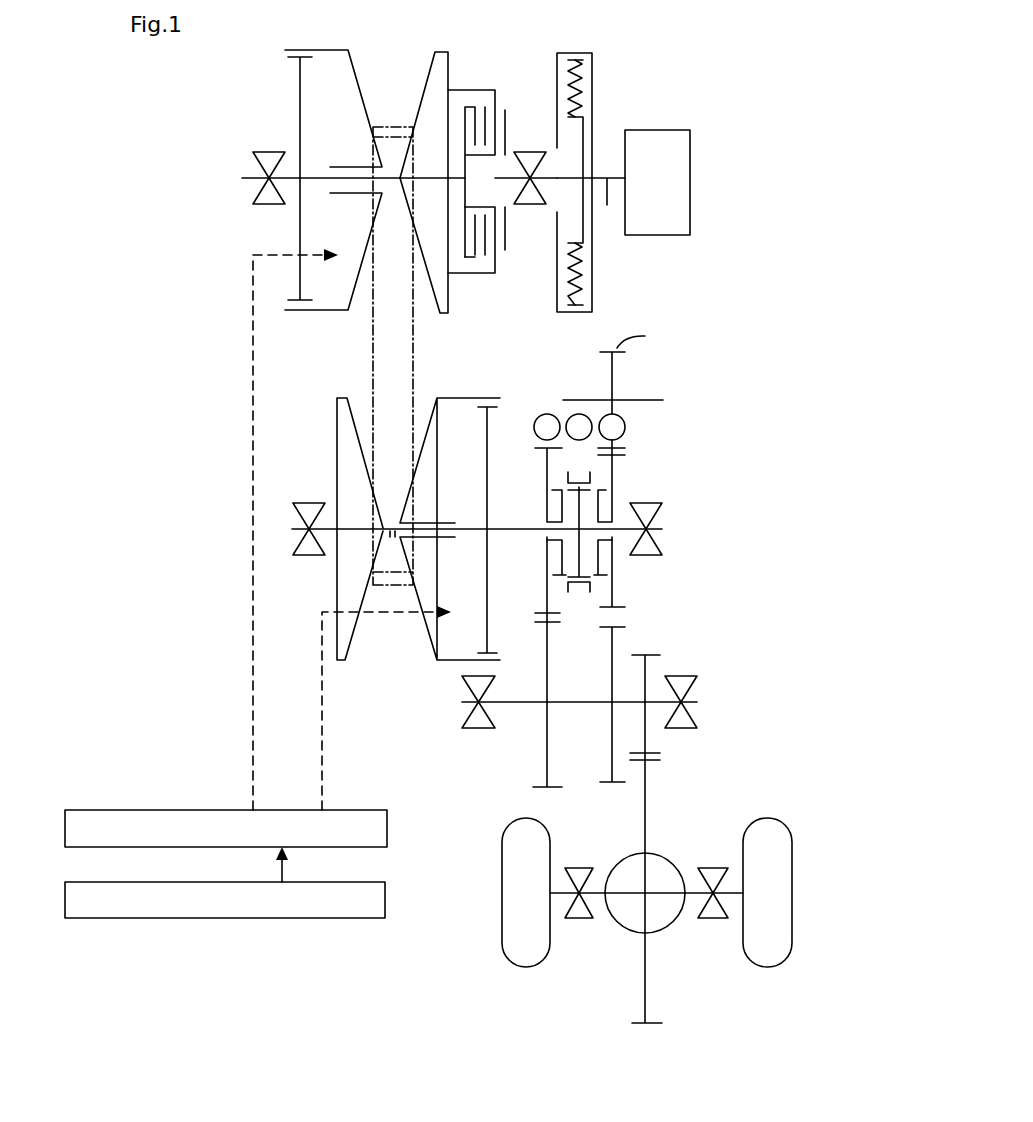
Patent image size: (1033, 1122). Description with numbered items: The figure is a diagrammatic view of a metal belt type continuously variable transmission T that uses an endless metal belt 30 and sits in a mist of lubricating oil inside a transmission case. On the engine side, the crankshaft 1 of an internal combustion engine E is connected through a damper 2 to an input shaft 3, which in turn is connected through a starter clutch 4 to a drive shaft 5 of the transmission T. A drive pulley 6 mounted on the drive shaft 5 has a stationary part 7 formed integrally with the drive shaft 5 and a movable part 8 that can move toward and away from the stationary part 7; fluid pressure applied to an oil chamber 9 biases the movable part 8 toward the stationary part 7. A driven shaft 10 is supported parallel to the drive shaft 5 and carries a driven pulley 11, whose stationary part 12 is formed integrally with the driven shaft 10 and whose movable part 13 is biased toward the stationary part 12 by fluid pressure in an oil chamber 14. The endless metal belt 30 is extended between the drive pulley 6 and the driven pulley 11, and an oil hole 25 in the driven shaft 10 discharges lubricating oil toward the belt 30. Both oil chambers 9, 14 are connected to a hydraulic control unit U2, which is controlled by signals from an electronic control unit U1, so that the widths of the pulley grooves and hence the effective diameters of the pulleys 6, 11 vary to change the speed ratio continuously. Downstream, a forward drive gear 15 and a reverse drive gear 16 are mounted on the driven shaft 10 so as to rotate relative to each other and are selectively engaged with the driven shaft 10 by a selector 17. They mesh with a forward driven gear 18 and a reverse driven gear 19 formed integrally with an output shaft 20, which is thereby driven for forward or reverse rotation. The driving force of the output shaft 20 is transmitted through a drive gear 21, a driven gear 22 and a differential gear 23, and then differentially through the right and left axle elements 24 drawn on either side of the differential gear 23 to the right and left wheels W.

The crankshaft 1 is at (608, 208).
The damper 2 is at (602, 75).
The input shaft 3 is at (558, 178).
The starter clutch 4 is at (483, 90).
The drive shaft 5 is at (321, 177).
The drive pulley 6 is at (366, 159).
The stationary part 7 is at (446, 78).
The movable part 8 is at (352, 76).
The oil chamber 9 is at (320, 236).
The driven shaft 10 is at (517, 528).
The driven pulley 11 is at (391, 554).
The stationary part 12 is at (337, 432).
The movable part 13 is at (430, 425).
The oil chamber 14 is at (438, 504).
The forward drive gear 15 is at (537, 447).
The reverse drive gear 16 is at (620, 457).
The selector 17 is at (580, 592).
The forward driven gear 18 is at (548, 790).
The reverse driven gear 19 is at (606, 785).
The output shaft 20 is at (573, 702).
The drive gear 21 is at (650, 655).
The driven gear 22 is at (655, 762).
The differential gear 23 is at (673, 866).
The axle shafts 24 is at (598, 897).
The oil hole 25 is at (392, 538).
The endless metal belt 30 is at (414, 380).
The internal combustion engine E is at (648, 197).
The wheels W is at (502, 945).
The continuously variable transmission T is at (314, 375).
The electronic control unit U1 is at (385, 902).
The hydraulic control unit U2 is at (387, 832).